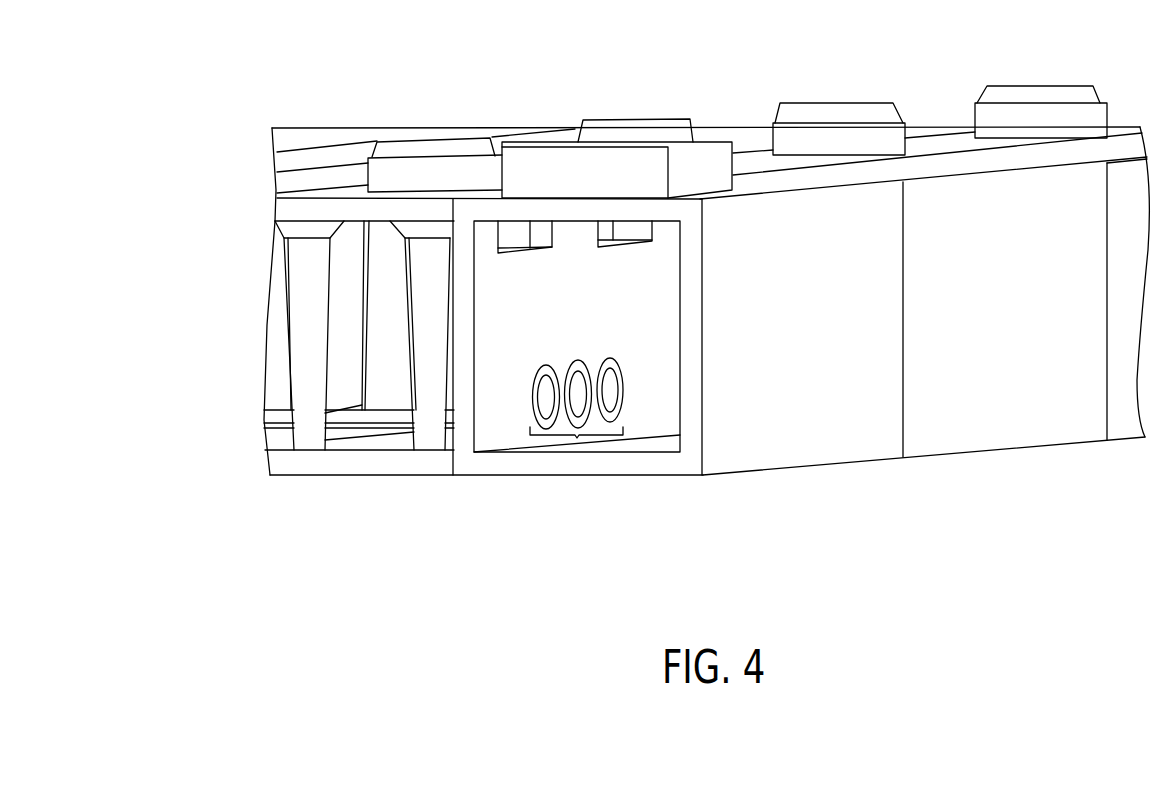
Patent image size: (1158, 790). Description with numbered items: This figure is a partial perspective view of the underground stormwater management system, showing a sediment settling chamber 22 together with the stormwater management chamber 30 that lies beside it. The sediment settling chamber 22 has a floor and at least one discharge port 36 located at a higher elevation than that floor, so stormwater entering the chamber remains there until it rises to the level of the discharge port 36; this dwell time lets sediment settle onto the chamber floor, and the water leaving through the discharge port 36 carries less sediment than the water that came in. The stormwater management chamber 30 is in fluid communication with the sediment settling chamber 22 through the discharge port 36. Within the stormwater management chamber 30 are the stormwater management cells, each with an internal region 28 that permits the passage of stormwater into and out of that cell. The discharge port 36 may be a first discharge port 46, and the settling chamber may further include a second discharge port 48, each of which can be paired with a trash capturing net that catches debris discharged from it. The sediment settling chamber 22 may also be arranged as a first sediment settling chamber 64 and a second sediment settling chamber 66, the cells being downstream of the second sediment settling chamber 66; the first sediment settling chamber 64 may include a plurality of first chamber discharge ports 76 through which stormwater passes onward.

The stormwater management chamber 30 is at (244, 133).
The internal region 28 is at (365, 377).
The sediment settling chamber 22 is at (777, 460).
The first sediment settling chamber 64 is at (865, 450).
The second sediment settling chamber 66 is at (1005, 432).
The discharge port 36 is at (528, 382).
The first discharge port 46 is at (544, 365).
The second discharge port 48 is at (578, 361).
The plurality of first chamber discharge ports 76 is at (577, 438).